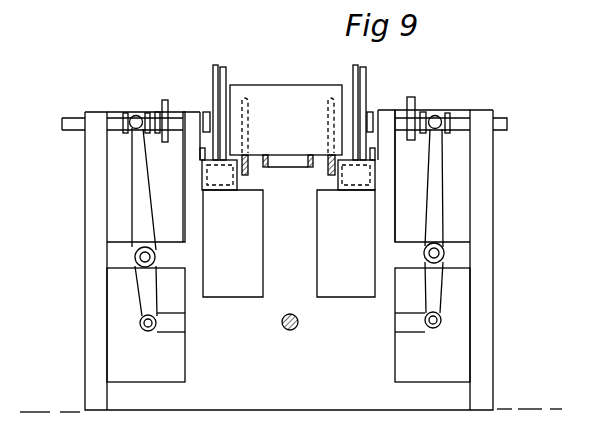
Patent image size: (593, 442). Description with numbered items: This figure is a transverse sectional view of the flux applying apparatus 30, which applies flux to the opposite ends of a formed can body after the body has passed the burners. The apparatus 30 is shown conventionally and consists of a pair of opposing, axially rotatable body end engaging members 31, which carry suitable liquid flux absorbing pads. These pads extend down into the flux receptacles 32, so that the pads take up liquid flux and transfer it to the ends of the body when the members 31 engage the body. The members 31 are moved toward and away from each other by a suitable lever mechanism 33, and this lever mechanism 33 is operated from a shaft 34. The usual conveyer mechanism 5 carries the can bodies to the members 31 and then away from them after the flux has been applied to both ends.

The flux applying apparatus 30 is at (484, 362).
The body end engaging members 31 is at (213, 75).
The flux receptacles 32 is at (213, 183).
The lever mechanism 33 is at (138, 217).
The shaft 34 is at (297, 328).
The conveyer mechanism 5 is at (249, 176).